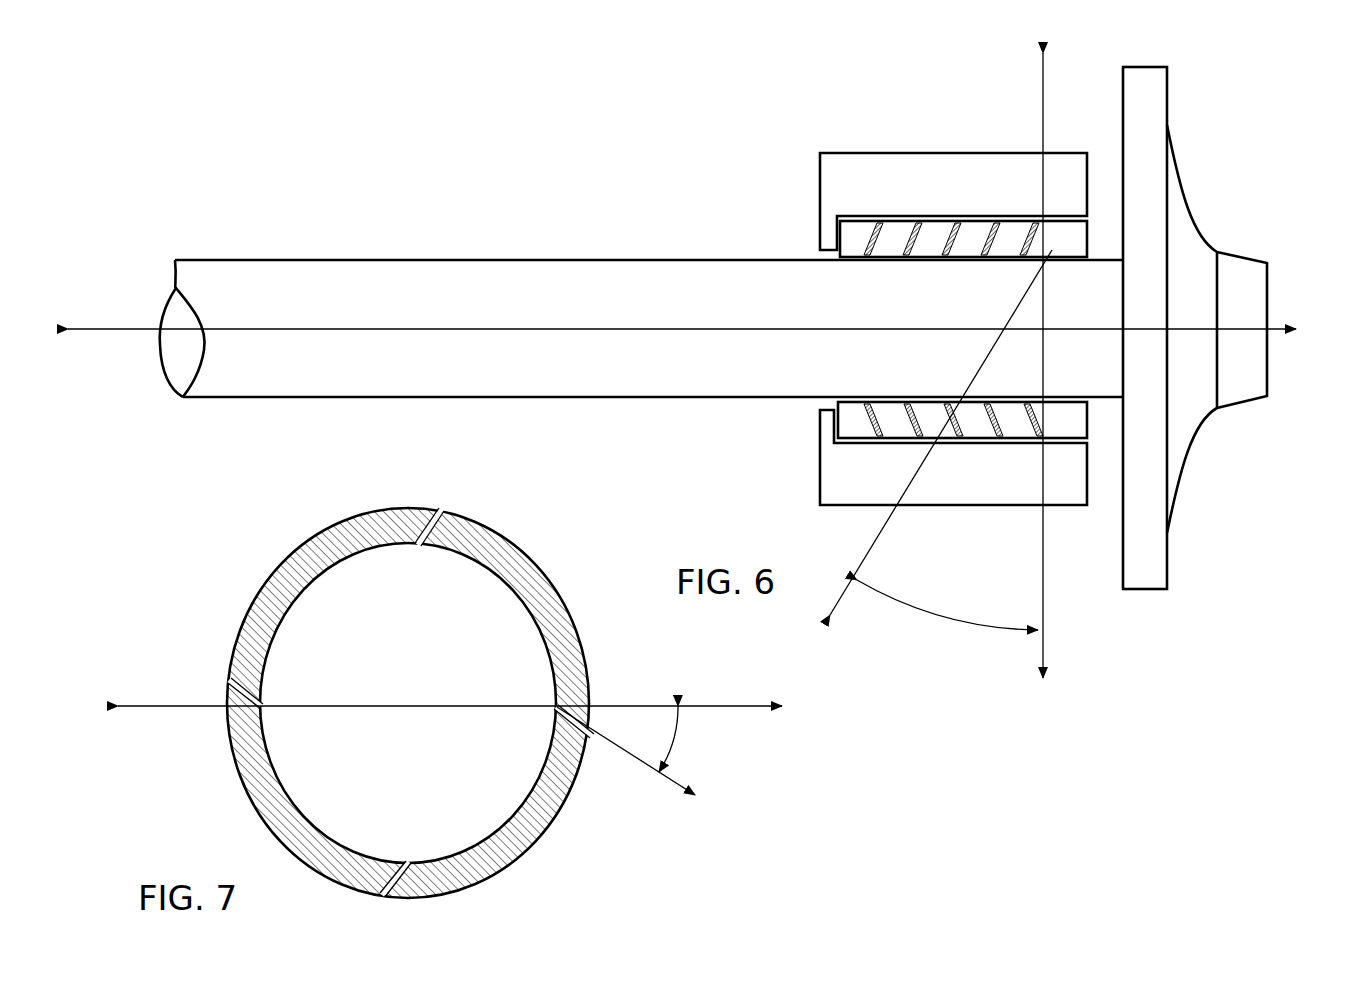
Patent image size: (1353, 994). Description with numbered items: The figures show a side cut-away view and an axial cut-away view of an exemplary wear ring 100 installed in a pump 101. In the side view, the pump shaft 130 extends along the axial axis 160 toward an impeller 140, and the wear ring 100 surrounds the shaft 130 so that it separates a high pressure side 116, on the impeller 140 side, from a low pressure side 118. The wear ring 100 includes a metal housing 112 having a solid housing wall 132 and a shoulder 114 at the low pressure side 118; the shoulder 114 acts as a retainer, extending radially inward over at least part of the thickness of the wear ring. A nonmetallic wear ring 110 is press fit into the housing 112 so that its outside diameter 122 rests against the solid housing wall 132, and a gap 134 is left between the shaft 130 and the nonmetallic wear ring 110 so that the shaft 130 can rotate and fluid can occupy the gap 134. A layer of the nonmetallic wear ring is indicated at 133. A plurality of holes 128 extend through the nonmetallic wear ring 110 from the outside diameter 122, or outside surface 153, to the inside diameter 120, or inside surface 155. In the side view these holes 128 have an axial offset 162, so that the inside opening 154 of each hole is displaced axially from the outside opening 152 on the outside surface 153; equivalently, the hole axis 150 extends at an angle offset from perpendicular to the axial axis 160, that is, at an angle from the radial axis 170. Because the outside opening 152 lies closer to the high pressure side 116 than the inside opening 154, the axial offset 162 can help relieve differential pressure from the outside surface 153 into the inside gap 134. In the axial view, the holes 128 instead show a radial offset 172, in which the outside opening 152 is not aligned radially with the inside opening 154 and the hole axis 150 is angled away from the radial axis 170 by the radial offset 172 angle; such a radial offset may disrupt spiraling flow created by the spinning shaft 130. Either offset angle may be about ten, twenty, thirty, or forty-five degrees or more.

In FIG. 6, the wear ring 100 is at (838, 442).
In FIG. 7, the wear ring 100 is at (212, 617).
In FIG. 6, the pump 101 is at (620, 98).
In FIG. 6, the nonmetallic wear ring 110 is at (858, 423).
In FIG. 6, the housing 112 is at (1022, 170).
In FIG. 6, the shoulder 114 is at (832, 225).
In FIG. 6, the high pressure side 116 is at (1095, 170).
In FIG. 6, the low pressure side 118 is at (818, 168).
In FIG. 7, the inside diameter 120 is at (490, 570).
In FIG. 7, the outside diameter 122 is at (560, 592).
In FIG. 6, the holes 128 is at (1050, 262).
In FIG. 7, the holes 128 is at (547, 753).
In FIG. 6, the shaft 130 is at (595, 282).
In FIG. 6, the solid housing wall 132 is at (957, 218).
In FIG. 6, the seal layer 133 is at (928, 217).
In FIG. 6, the gap 134 is at (918, 260).
In FIG. 6, the impeller 140 is at (1193, 230).
In FIG. 6, the hole axis 150 is at (855, 595).
In FIG. 7, the hole axis 150 is at (640, 757).
In FIG. 7, the outside opening 152 is at (590, 733).
In FIG. 7, the outside surface 153 is at (520, 542).
In FIG. 7, the inside opening 154 is at (553, 717).
In FIG. 7, the inside surface 155 is at (428, 548).
In FIG. 6, the axial axis 160 is at (568, 330).
In FIG. 6, the axial offset 162 is at (940, 618).
In FIG. 6, the radial axis 170 is at (1045, 608).
In FIG. 7, the radial axis 170 is at (742, 705).
In FIG. 7, the radial offset 172 is at (680, 738).